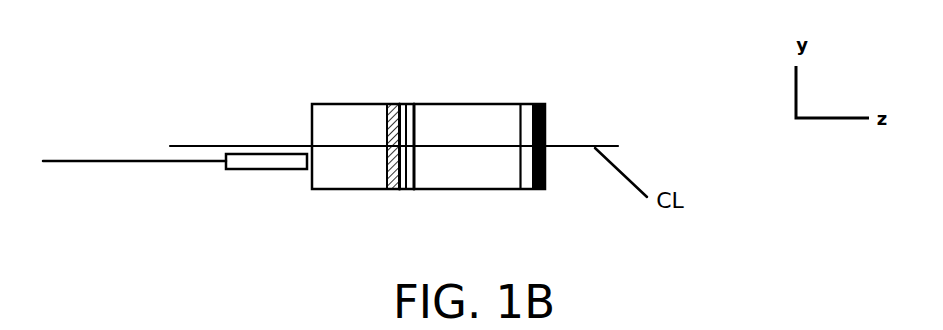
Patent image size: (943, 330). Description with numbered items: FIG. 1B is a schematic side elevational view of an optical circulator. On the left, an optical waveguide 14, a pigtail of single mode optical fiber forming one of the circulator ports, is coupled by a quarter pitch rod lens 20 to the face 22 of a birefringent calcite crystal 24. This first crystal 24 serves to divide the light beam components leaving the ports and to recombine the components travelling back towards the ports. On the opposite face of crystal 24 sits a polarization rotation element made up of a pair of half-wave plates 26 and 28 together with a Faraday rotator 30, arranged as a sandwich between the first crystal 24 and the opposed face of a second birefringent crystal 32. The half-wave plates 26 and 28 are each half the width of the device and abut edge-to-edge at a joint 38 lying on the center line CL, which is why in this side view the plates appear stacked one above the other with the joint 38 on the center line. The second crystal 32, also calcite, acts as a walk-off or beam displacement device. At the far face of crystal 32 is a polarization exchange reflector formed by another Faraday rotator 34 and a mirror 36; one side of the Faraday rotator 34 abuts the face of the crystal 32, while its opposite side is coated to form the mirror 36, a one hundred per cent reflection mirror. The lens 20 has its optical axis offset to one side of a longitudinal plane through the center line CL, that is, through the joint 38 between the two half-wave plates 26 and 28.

The optical waveguide 14 is at (142, 158).
The quarter pitch rod lens 20 is at (260, 153).
The face of birefringent calcite crystal 22 is at (311, 188).
The birefringent calcite crystal 24 is at (345, 112).
The half-wave plate 26 is at (392, 104).
The half-wave plate 28 is at (392, 190).
The Faraday rotator 30 is at (410, 190).
The second birefringent crystal 32 is at (459, 110).
The Faraday rotator 34 is at (528, 102).
The mirror 36 is at (546, 117).
The joint 38 is at (401, 148).